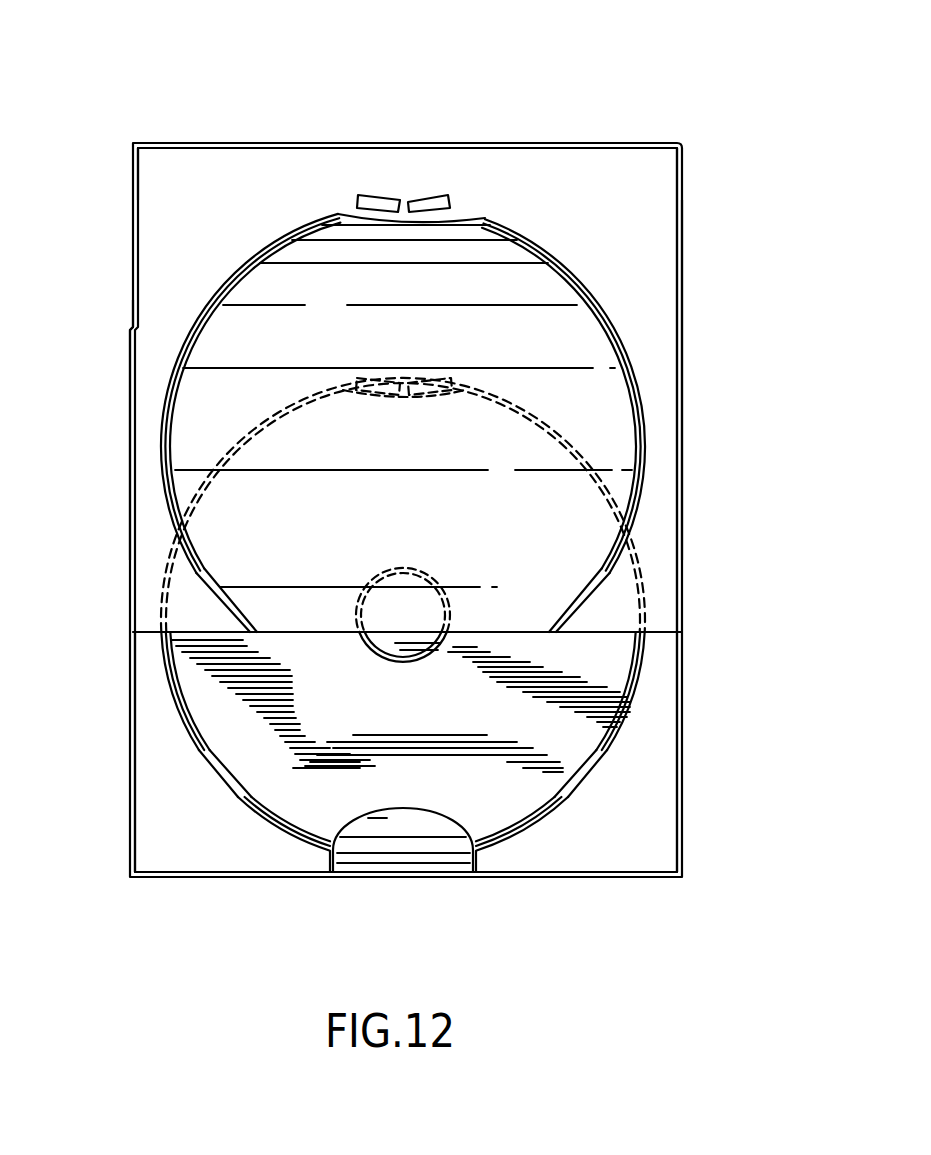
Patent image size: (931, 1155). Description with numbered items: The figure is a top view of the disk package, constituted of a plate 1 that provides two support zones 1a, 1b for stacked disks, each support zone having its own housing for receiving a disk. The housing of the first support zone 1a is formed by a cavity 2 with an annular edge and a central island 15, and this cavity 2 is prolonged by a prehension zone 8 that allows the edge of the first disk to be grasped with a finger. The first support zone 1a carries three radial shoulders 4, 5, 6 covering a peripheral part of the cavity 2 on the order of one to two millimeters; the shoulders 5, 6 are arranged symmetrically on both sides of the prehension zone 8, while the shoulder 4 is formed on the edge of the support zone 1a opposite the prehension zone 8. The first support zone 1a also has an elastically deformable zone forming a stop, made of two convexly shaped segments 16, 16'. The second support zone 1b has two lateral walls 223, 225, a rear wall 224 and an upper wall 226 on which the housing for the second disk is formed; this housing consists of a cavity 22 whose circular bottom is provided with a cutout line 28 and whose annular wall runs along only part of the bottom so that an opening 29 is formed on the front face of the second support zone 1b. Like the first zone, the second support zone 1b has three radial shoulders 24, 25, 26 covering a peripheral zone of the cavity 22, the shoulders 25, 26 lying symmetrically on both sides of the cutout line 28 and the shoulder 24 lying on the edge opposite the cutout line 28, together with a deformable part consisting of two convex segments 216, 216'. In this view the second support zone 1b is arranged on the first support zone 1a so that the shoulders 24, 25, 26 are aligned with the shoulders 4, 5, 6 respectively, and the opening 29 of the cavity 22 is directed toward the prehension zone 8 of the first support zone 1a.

The plate 1 is at (672, 52).
The first support zone 1a is at (632, 835).
The second support zone 1b is at (648, 208).
The cavity 2 is at (508, 805).
The radial shoulder 4 is at (440, 394).
The radial shoulder 5 is at (592, 776).
The radial shoulder 6 is at (212, 778).
The prehension zone 8 is at (388, 862).
The central island 15 is at (386, 652).
The convexly shaped segment 16 is at (388, 346).
The convexly shaped segment 16' is at (481, 354).
The cavity 22 is at (488, 248).
The radial shoulder 24 is at (458, 213).
The radial shoulder 25 is at (592, 603).
The radial shoulder 26 is at (210, 598).
The cutout line 28 is at (503, 634).
The opening 29 is at (283, 647).
The convex segment 216 is at (363, 147).
The convex segment 216' is at (460, 148).
The lateral wall 223 is at (132, 415).
The rear wall 224 is at (214, 143).
The lateral wall 225 is at (683, 345).
The upper wall 226 is at (157, 168).